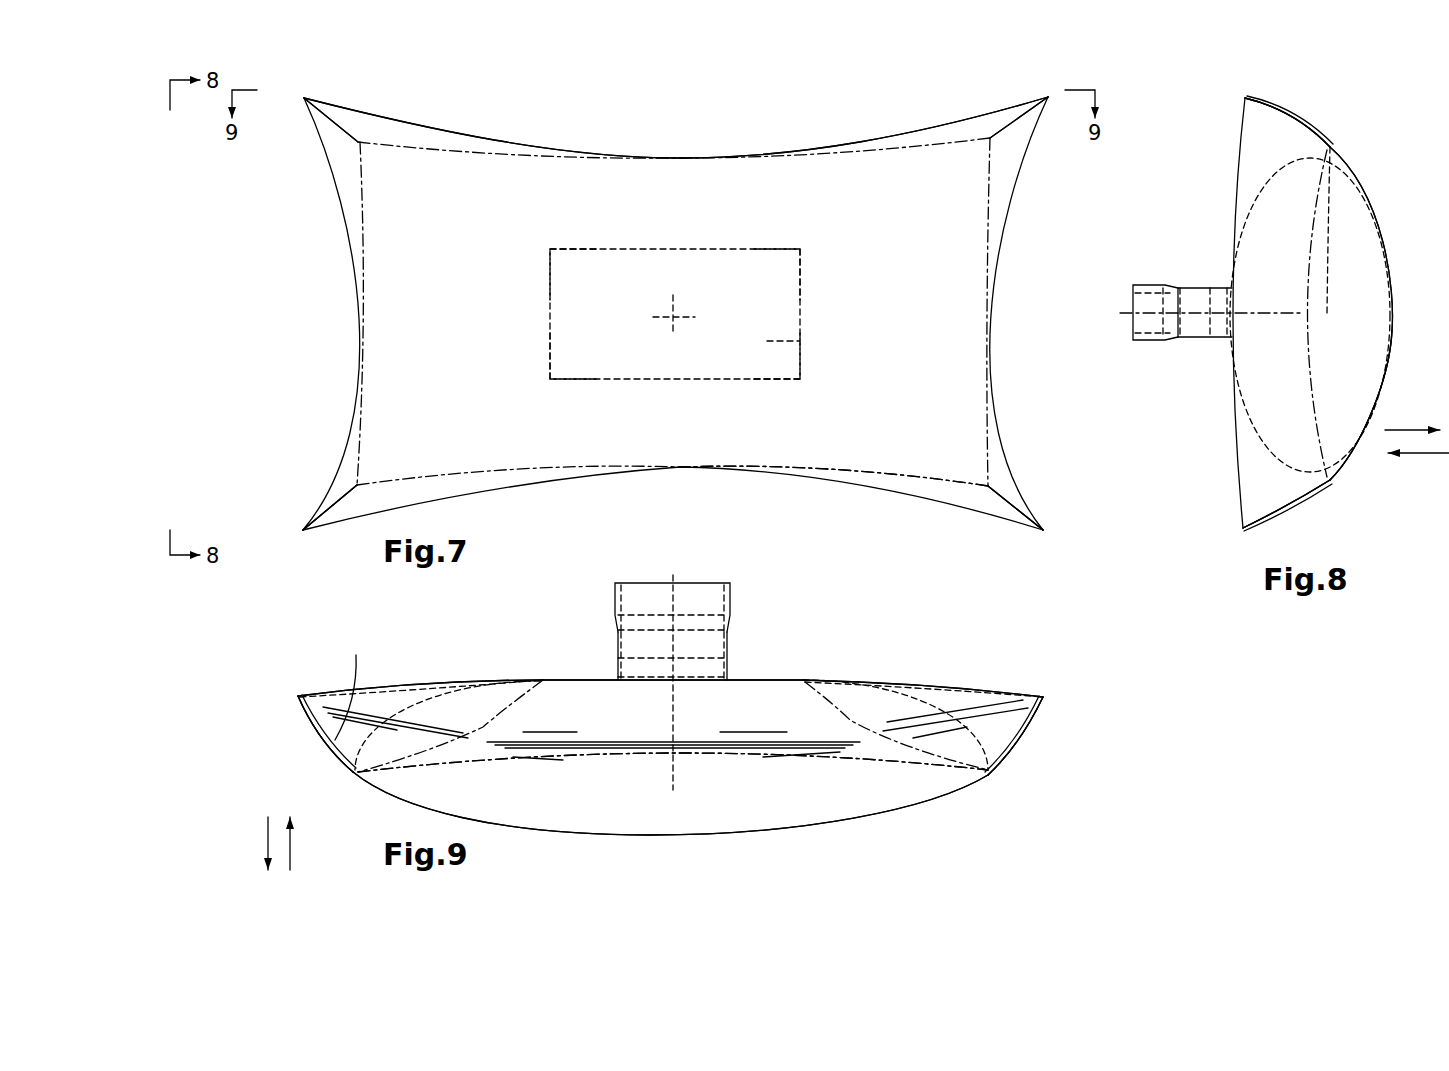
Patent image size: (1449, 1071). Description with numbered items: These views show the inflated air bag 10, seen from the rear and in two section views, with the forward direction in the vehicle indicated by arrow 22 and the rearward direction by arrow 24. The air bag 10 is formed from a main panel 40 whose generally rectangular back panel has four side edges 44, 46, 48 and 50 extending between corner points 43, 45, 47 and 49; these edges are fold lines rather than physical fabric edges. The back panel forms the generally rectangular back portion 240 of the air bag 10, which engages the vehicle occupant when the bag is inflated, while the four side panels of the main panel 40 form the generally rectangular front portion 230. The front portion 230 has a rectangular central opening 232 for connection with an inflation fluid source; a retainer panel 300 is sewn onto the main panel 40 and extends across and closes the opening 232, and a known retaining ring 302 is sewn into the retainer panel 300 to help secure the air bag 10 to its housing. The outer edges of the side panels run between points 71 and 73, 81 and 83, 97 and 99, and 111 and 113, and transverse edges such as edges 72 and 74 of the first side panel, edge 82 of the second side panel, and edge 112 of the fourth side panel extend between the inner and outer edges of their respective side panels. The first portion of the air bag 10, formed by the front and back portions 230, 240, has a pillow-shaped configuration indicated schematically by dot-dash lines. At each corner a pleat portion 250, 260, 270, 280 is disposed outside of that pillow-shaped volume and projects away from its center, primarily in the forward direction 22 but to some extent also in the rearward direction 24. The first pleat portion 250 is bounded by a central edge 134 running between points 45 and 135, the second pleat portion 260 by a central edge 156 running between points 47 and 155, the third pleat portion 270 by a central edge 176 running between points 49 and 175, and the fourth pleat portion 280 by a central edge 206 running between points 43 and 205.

In FIG. 7, the air bag 10 is at (620, 130).
In FIG. 8, the air bag 10 is at (1378, 172).
In FIG. 9, the air bag 10 is at (912, 852).
In FIG. 8, the forward direction arrow 22 is at (1427, 453).
In FIG. 9, the forward direction arrow 22 is at (290, 862).
In FIG. 8, the rearward direction arrow 24 is at (1402, 430).
In FIG. 9, the rearward direction arrow 24 is at (268, 838).
In FIG. 7, the main panel 40 is at (1019, 313).
In FIG. 8, the main panel 40 is at (1388, 267).
In FIG. 9, the main panel 40 is at (540, 830).
In FIG. 7, the point 43 is at (360, 143).
In FIG. 8, the point 43 is at (1330, 147).
In FIG. 9, the point 43 is at (352, 772).
In FIG. 7, the first side edge 44 is at (423, 148).
In FIG. 9, the first side edge 44 is at (507, 770).
In FIG. 7, the point 45 is at (990, 138).
In FIG. 9, the point 45 is at (988, 775).
In FIG. 7, the second side edge 46 is at (990, 217).
In FIG. 7, the point 47 is at (988, 487).
In FIG. 7, the third side edge 48 is at (868, 472).
In FIG. 7, the point 49 is at (357, 485).
In FIG. 8, the point 49 is at (1330, 480).
In FIG. 7, the fourth side edge 50 is at (363, 187).
In FIG. 8, the fourth side edge 50 is at (1310, 232).
In FIG. 7, the point 71 is at (526, 262).
In FIG. 9, the transverse edge 72 is at (483, 727).
In FIG. 7, the point 73 is at (813, 273).
In FIG. 9, the transverse edge 74 is at (848, 720).
In FIG. 7, the point 81 is at (800, 250).
In FIG. 9, the transverse edge 82 is at (928, 702).
In FIG. 7, the point 83 is at (818, 371).
In FIG. 7, the point 97 is at (800, 379).
In FIG. 7, the point 99 is at (528, 373).
In FIG. 7, the point 111 is at (550, 379).
In FIG. 9, the transverse edge 112 is at (412, 700).
In FIG. 7, the point 113 is at (550, 249).
In FIG. 7, the central edge 134 is at (1003, 132).
In FIG. 9, the central edge 134 is at (1013, 723).
In FIG. 7, the point 135 is at (1048, 97).
In FIG. 9, the point 135 is at (1043, 697).
In FIG. 7, the point 155 is at (1043, 530).
In FIG. 7, the central edge 156 is at (1015, 502).
In FIG. 7, the point 175 is at (303, 530).
In FIG. 8, the point 175 is at (1243, 528).
In FIG. 7, the central edge 176 is at (340, 498).
In FIG. 8, the central edge 176 is at (1287, 503).
In FIG. 7, the point 205 is at (304, 98).
In FIG. 8, the point 205 is at (1243, 98).
In FIG. 9, the point 205 is at (298, 697).
In FIG. 7, the central edge 206 is at (340, 122).
In FIG. 8, the central edge 206 is at (1273, 118).
In FIG. 9, the central edge 206 is at (356, 686).
In FIG. 7, the front portion 230 is at (750, 173).
In FIG. 9, the front portion 230 is at (578, 680).
In FIG. 7, the central opening 232 is at (767, 341).
In FIG. 7, the back portion 240 is at (702, 176).
In FIG. 8, the back portion 240 is at (1405, 317).
In FIG. 9, the back portion 240 is at (618, 833).
In FIG. 7, the first pleat portion 250 is at (912, 126).
In FIG. 9, the first pleat portion 250 is at (990, 685).
In FIG. 7, the second pleat portion 260 is at (962, 515).
In FIG. 7, the third pleat portion 270 is at (430, 500).
In FIG. 8, the third pleat portion 270 is at (1233, 473).
In FIG. 7, the fourth pleat portion 280 is at (465, 123).
In FIG. 8, the fourth pleat portion 280 is at (1298, 112).
In FIG. 9, the fourth pleat portion 280 is at (310, 728).
In FIG. 7, the retainer panel 300 is at (720, 243).
In FIG. 8, the retainer panel 300 is at (1157, 348).
In FIG. 9, the retainer panel 300 is at (733, 643).
In FIG. 8, the retaining ring 302 is at (1147, 292).
In FIG. 9, the retaining ring 302 is at (733, 600).